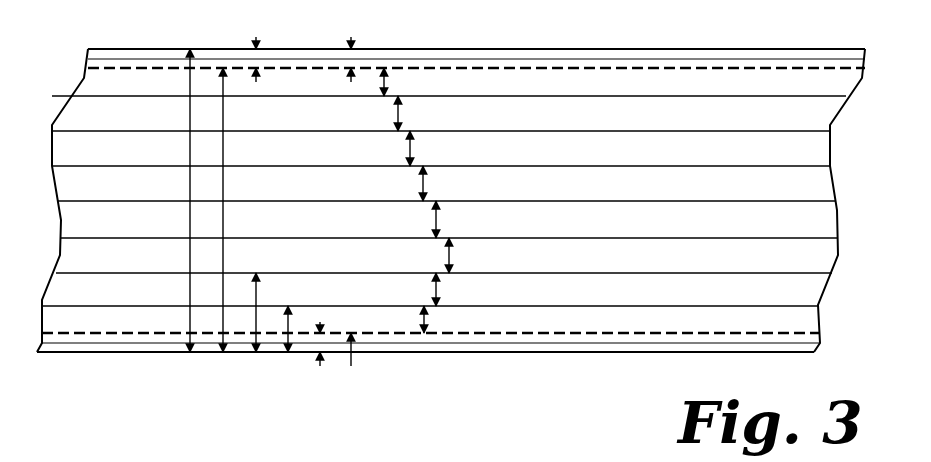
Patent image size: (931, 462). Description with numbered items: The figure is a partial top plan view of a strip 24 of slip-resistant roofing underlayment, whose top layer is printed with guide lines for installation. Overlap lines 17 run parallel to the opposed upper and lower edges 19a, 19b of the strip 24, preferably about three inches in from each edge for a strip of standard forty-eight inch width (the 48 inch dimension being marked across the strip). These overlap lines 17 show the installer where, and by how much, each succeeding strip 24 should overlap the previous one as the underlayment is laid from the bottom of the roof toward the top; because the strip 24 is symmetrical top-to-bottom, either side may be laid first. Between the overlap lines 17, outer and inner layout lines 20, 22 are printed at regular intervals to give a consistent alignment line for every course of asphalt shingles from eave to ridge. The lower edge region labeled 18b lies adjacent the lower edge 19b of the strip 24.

The overlap line 17 is at (577, 67).
The lower rail portion 18b is at (756, 302).
The upper edge 19a is at (782, 50).
The lower edge 19b is at (448, 352).
The outer layout line 20 is at (452, 58).
The inner layout line 22 is at (798, 167).
The strip 24 is at (40, 168).
The 48 inch dimension 48 is at (168, 200).